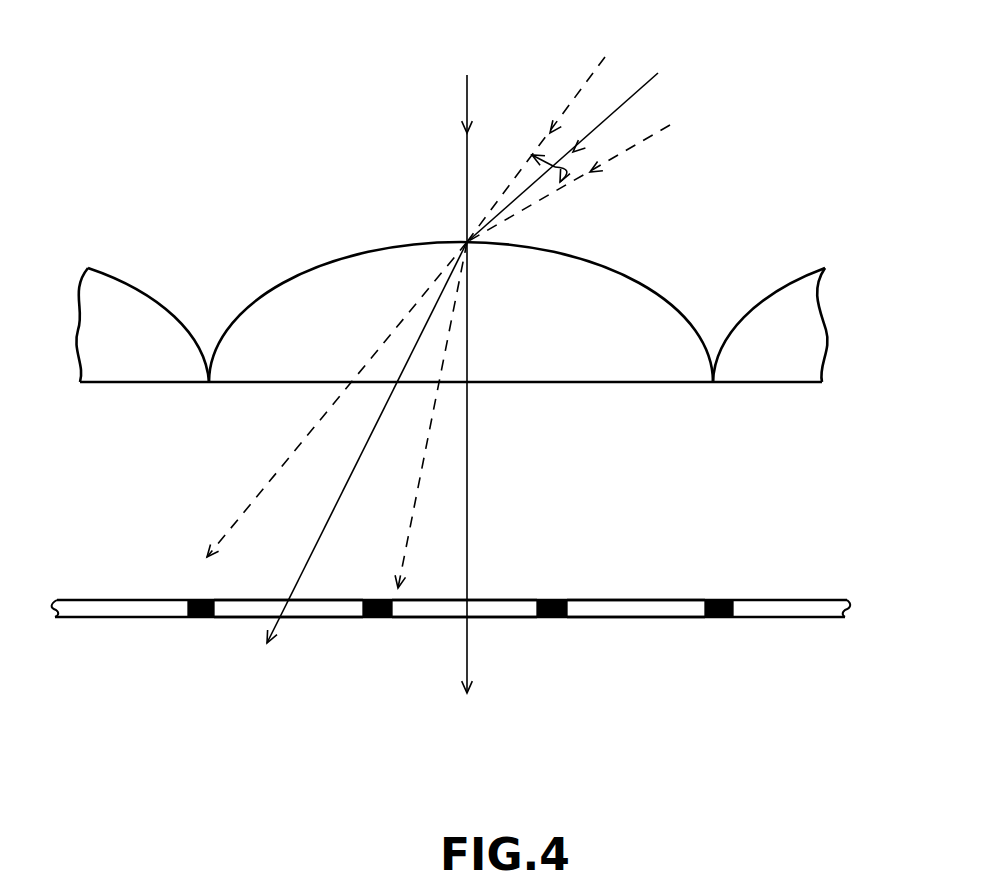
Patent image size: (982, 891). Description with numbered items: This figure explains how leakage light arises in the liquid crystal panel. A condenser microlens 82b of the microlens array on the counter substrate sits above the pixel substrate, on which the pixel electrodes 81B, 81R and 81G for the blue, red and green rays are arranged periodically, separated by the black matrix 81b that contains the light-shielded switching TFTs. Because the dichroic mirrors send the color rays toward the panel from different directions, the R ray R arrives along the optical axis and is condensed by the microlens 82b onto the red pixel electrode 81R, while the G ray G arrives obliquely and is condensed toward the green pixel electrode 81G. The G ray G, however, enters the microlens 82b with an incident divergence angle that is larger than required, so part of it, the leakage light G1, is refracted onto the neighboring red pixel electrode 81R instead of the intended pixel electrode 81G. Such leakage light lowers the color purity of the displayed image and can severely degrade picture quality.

The microlens 82b is at (270, 293).
The black matrix 81b is at (727, 600).
The pixel electrode for G ray 81G is at (323, 617).
The pixel electrode for R ray 81R is at (520, 617).
The pixel electrode for B ray 81B is at (688, 617).
The R ray R is at (468, 359).
The G ray G is at (451, 335).
The leakage light G1 is at (412, 528).